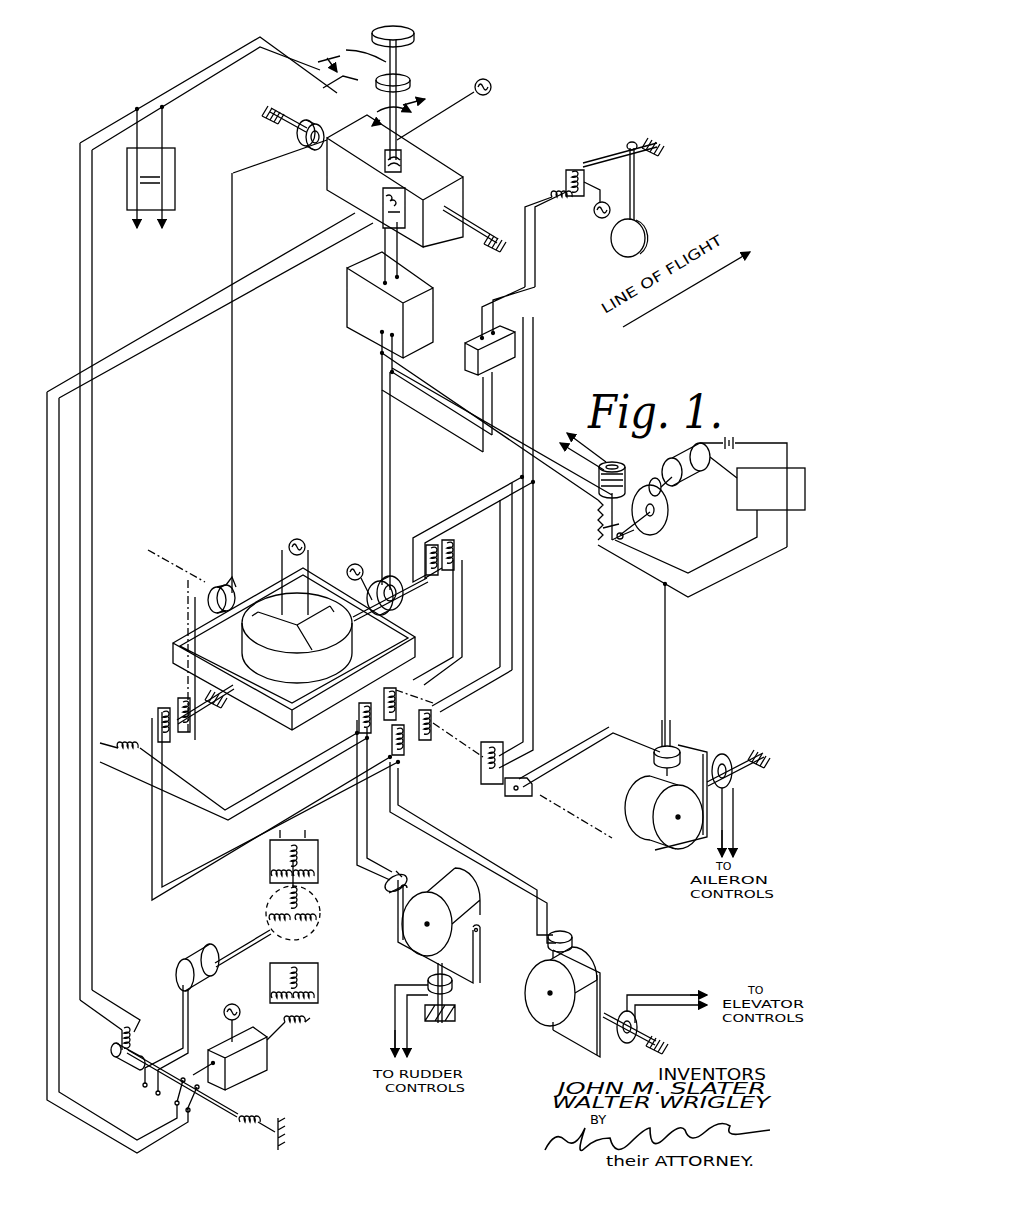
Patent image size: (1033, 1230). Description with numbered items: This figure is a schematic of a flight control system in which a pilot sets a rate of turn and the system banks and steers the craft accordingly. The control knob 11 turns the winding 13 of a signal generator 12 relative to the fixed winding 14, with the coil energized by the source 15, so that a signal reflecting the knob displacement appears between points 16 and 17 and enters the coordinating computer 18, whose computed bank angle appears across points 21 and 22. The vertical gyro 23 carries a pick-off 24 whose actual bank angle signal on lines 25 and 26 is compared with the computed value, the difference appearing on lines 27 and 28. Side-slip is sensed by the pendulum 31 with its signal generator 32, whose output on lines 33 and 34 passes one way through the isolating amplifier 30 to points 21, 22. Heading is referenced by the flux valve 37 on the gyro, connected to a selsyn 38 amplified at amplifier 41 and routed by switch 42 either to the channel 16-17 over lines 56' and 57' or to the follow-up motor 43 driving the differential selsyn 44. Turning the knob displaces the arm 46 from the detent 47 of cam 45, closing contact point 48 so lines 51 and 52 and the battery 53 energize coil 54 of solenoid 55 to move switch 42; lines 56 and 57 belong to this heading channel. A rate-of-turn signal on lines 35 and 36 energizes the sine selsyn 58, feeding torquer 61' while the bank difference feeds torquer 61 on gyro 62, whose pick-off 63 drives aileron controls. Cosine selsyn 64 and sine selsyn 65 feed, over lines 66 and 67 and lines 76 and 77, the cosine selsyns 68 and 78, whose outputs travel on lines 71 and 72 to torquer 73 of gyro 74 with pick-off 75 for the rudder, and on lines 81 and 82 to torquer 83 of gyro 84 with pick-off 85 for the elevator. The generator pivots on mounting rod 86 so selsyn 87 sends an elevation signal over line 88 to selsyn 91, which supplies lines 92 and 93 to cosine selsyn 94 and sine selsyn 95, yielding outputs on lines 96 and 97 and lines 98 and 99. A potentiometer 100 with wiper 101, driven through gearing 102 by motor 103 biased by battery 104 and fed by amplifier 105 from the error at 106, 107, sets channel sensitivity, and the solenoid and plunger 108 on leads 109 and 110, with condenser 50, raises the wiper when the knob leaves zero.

The control knob 11 is at (415, 38).
The signal generator 12 is at (464, 188).
The winding 13 is at (404, 158).
The winding 14 is at (382, 204).
The source 15 is at (492, 88).
The point 16 is at (384, 242).
The point 17 is at (397, 252).
The coordinating computer 18 is at (424, 346).
The point 21 is at (382, 334).
The point 22 is at (392, 346).
The vertical gyro 23 is at (324, 584).
The pick-off 24 is at (394, 563).
The line 25 is at (390, 466).
The line 26 is at (382, 480).
The line 27 is at (432, 410).
The line 28 is at (450, 416).
The amplifier 30 is at (476, 332).
The pendulum 31 is at (636, 174).
The signal generator 32 is at (562, 173).
The line 33 is at (536, 274).
The line 34 is at (538, 294).
The line 35 is at (538, 354).
The line 36 is at (538, 377).
The flux valve 37 is at (297, 638).
The selsyn 38 is at (340, 1034).
The amplifier 41 is at (246, 1086).
The switch 42 is at (170, 1100).
The follow-up motor 43 is at (196, 958).
The differential selsyn 44 is at (274, 864).
The cam 45 is at (412, 82).
The arm 46 is at (385, 107).
The detent 47 is at (365, 93).
The contact point 48 is at (330, 86).
The condenser 50 is at (160, 166).
The line 51 is at (226, 52).
The line 52 is at (240, 67).
The battery 53 is at (320, 60).
The coil 54 is at (130, 1024).
The solenoid 55 is at (122, 1062).
The line 56 is at (106, 965).
The line 57 is at (116, 983).
The line 56' is at (201, 683).
The line 57' is at (216, 681).
The sine selsyn 58 is at (490, 788).
The precession torquer 61 is at (682, 777).
The precession torquer 61' is at (646, 761).
The gyro 62 is at (629, 800).
The pick-off 63 is at (716, 756).
The cosine selsyn 64 is at (434, 578).
The sine selsyn 65 is at (482, 578).
The line 66 is at (453, 627).
The line 67 is at (462, 630).
The cosine selsyn 68 is at (406, 694).
The line 71 is at (357, 826).
The line 72 is at (371, 836).
The precession torquer 73 is at (402, 878).
The torqued gyro 74 is at (462, 892).
The selsyn pick-off 75 is at (456, 991).
The line 76 is at (456, 695).
The line 77 is at (486, 689).
The cosine selsyn 78 is at (412, 746).
The line 81 is at (439, 836).
The line 82 is at (455, 850).
The precession torquer 83 is at (566, 932).
The torqued gyro 84 is at (602, 956).
The selsyn pick-off 85 is at (626, 1042).
The mounting rod 86 is at (464, 216).
The selsyn 87 is at (306, 154).
The line 88 is at (232, 472).
The selsyn 91 is at (220, 587).
The line 92 is at (190, 598).
The line 93 is at (188, 624).
The cosine selsyn 94 is at (192, 735).
The sine selsyn 95 is at (140, 708).
The line 96 is at (152, 812).
The line 97 is at (162, 832).
The transmission line 98 is at (206, 796).
The transmission line 99 is at (210, 812).
The potentiometer 100 is at (596, 518).
The wiper 101 is at (616, 544).
The stepdown gearing 102 is at (666, 502).
The motor 103 is at (682, 458).
The battery 104 is at (746, 440).
The amplifier 105 is at (738, 508).
The lead 106 is at (670, 566).
The lead 107 is at (663, 588).
The solenoid and plunger 108 is at (626, 466).
The lead 109 is at (168, 216).
The lead 110 is at (136, 224).